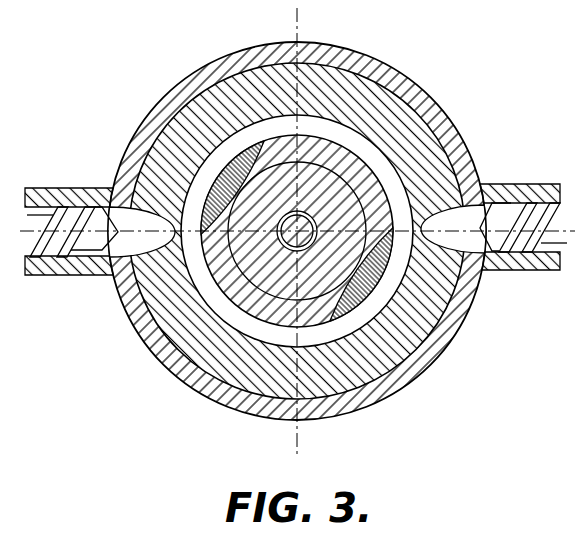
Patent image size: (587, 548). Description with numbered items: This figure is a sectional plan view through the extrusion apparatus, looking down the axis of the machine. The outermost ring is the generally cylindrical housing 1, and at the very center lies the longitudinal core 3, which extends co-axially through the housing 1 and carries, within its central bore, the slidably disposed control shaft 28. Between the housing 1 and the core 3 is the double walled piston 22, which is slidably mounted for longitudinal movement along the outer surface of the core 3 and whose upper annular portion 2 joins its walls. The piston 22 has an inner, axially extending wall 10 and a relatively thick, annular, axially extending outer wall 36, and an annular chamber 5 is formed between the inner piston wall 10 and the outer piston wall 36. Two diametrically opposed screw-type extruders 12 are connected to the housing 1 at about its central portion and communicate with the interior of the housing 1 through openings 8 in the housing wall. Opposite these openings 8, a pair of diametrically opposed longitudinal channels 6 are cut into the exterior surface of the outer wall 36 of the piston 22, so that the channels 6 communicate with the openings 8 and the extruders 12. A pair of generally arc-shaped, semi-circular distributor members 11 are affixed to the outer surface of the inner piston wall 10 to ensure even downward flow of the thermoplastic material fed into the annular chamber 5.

The housing 1 is at (197, 377).
The upper annular portion 2 is at (197, 332).
The longitudinal core 3 is at (420, 345).
The annular chamber 5 is at (203, 272).
The longitudinal channels 6 is at (147, 238).
The openings 8 is at (122, 208).
The inner piston wall 10 is at (354, 163).
The distributor members 11 is at (214, 182).
The screw-type extruders 12 is at (39, 189).
The double walled piston 22 is at (362, 368).
The control shaft 28 is at (290, 222).
The outer piston wall 36 is at (347, 88).